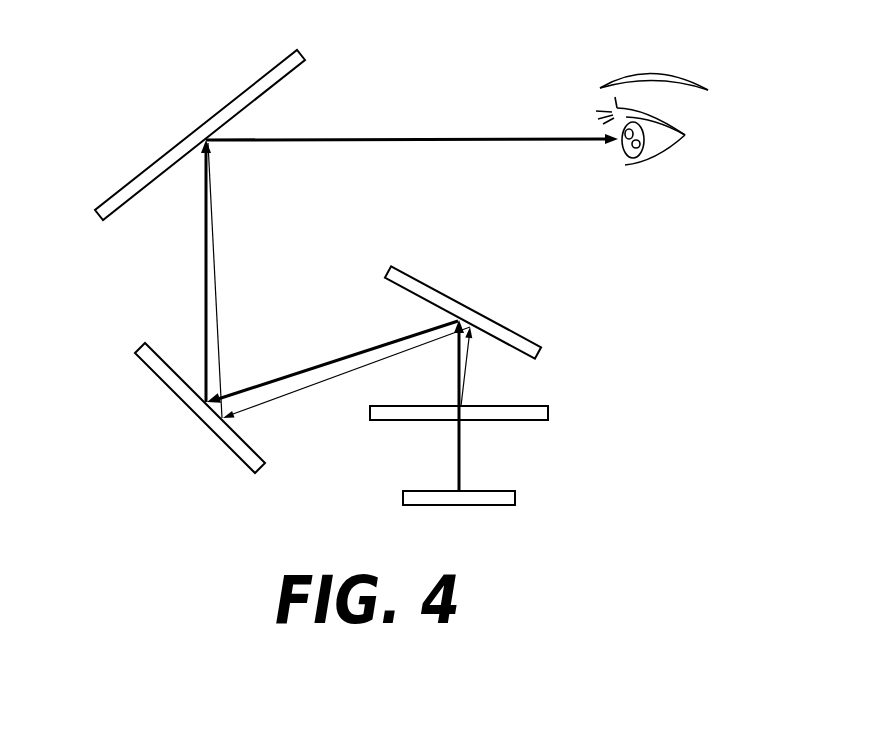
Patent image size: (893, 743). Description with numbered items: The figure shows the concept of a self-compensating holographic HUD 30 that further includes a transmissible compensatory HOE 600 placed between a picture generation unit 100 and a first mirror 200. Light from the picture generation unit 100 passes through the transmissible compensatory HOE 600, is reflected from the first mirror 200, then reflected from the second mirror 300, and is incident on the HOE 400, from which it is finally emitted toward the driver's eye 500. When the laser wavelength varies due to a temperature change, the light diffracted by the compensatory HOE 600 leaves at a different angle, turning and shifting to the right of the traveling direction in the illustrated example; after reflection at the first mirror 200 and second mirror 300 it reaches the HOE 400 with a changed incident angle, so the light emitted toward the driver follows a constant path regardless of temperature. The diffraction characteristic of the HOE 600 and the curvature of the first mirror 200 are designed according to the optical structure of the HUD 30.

The self-compensating holographic HUD 30 is at (64, 47).
The picture generation unit 100 is at (515, 497).
The first mirror 200 is at (432, 293).
The second mirror 300 is at (162, 380).
The HOE 400 is at (223, 113).
The eye of user 500 is at (685, 135).
The transmissible compensatory HOE 600 is at (548, 413).